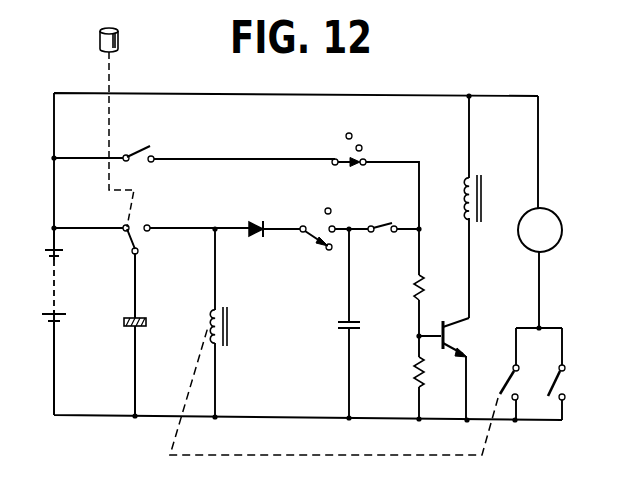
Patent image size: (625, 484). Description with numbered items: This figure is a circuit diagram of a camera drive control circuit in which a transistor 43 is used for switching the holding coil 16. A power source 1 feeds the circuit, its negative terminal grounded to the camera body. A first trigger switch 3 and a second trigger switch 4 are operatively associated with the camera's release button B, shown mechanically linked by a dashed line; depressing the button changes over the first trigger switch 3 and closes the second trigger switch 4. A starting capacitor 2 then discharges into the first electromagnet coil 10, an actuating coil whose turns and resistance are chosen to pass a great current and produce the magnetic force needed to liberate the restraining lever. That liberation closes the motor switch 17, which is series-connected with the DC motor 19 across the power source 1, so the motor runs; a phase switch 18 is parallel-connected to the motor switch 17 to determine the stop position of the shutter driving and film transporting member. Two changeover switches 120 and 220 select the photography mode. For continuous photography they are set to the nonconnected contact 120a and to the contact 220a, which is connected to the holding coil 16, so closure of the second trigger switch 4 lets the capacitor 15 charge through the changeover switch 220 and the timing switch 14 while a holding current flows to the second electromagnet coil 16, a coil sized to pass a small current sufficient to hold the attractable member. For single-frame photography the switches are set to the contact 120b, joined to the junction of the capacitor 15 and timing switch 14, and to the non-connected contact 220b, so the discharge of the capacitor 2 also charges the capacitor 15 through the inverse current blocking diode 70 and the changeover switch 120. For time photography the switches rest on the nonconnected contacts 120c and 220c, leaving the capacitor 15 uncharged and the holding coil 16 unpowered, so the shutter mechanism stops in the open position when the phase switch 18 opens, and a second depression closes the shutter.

The release button B is at (98, 37).
The power source 1 is at (42, 318).
The starting capacitor 2 is at (147, 323).
The first trigger switch 3 is at (129, 239).
The second trigger switch 4 is at (141, 150).
The first electromagnet coil 10 is at (230, 317).
The timing switch 14 is at (371, 233).
The capacitor 15 is at (337, 325).
The second electromagnet coil 16 is at (483, 201).
The motor switch 17 is at (506, 383).
The phase switch 18 is at (556, 380).
The DC motor 19 is at (518, 236).
The transistor 43 is at (466, 328).
The inverse current blocking diode 70 is at (256, 222).
The changeover switch 120 is at (318, 238).
The nonconnected contact 120a is at (329, 251).
The contact 120b is at (330, 226).
The nonconnected contact 120c is at (326, 208).
The changeover switch 220 is at (345, 166).
The contact 220a is at (366, 160).
The non-connected contact 220b is at (361, 145).
The nonconnected contact 220c is at (349, 133).